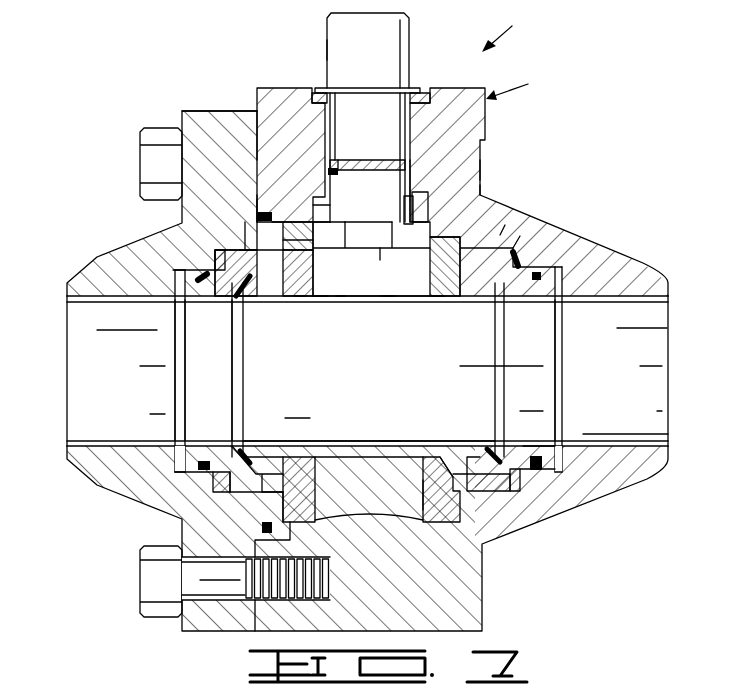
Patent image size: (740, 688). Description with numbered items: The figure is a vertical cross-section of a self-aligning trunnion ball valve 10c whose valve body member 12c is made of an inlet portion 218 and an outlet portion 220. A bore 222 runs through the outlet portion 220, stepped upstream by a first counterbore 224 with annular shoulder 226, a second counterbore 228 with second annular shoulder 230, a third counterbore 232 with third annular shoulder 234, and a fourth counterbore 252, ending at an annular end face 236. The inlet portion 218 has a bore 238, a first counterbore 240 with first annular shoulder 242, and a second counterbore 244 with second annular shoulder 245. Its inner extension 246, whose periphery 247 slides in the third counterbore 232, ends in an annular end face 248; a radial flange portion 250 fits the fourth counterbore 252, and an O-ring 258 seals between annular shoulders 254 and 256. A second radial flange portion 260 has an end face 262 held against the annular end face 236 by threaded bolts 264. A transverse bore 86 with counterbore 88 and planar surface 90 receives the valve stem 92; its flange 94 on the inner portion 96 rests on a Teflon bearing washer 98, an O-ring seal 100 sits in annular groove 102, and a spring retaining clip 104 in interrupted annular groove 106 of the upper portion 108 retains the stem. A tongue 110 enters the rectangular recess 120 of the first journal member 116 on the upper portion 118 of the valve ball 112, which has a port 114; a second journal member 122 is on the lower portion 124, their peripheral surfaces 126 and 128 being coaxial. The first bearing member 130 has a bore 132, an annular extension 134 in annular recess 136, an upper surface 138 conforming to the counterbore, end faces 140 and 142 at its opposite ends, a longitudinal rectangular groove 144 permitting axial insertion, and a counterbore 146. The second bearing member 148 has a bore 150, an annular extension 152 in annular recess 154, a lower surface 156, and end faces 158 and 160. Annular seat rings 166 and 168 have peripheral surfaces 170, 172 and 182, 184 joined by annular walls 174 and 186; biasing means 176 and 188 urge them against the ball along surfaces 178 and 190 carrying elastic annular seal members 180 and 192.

The self-aligning trunnion ball valve 10c is at (512, 34).
The valve body member 12c is at (522, 87).
The transverse bore 86 is at (420, 190).
The counterbore 88 is at (418, 214).
The planar surface 90 is at (414, 210).
The valve stem 92 is at (395, 36).
The flange 94 is at (348, 200).
The inner portion of the stem 96 is at (390, 292).
The bearing washer 98 is at (318, 204).
The O-ring seal 100 is at (338, 165).
The annular groove 102 is at (398, 162).
The spring retaining clip 104 is at (414, 95).
The interrupted annular groove 106 is at (331, 92).
The upper portion of the stem 108 is at (350, 46).
The tongue 110 is at (382, 300).
The valve ball 112 is at (390, 302).
The port 114 is at (406, 384).
The first journal member 116 is at (336, 302).
The upper portion of the valve ball 118 is at (388, 302).
The rectangular recess 120 is at (364, 245).
The second journal member 122 is at (348, 455).
The lower portion of the valve ball 124 is at (388, 440).
The peripheral surface of the first journal member 126 is at (438, 302).
The peripheral surface of the second journal member 128 is at (428, 497).
The first bearing member 130 is at (318, 302).
The bore of the first bearing member 132 is at (313, 264).
The annular extension 134 is at (322, 302).
The annular recess 136 is at (300, 302).
The upper surface of the first bearing member 138 is at (318, 220).
The seal ring 140 is at (252, 292).
The end face of the first bearing member 142 is at (460, 234).
The longitudinal rectangular groove 144 is at (313, 244).
The counterbore of the bearing bore 146 is at (432, 258).
The second bearing member 148 is at (300, 455).
The bore of the second bearing member 150 is at (318, 457).
The annular extension 152 is at (290, 458).
The annular recess 154 is at (445, 457).
The lower surface of the second bearing member 156 is at (305, 530).
The end face of the second bearing member 158 is at (283, 508).
The end face of the second bearing member 160 is at (455, 505).
The annular seat ring 166 is at (204, 460).
The annular seat ring 168 is at (537, 456).
The first peripheral surface 170 is at (195, 272).
The second peripheral surface 172 is at (250, 225).
The annular wall 174 is at (222, 492).
The biasing means 176 is at (213, 485).
The surface 178 is at (248, 463).
The elastic annular seal member 180 is at (240, 302).
The first peripheral surface 182 is at (545, 472).
The second peripheral surface 184 is at (508, 222).
The annular wall 186 is at (543, 274).
The biasing means 188 is at (516, 490).
The surface 190 is at (478, 470).
The elastic annular seal member 192 is at (490, 447).
The inlet portion 218 is at (118, 262).
The outlet portion 220 is at (625, 262).
The bore 222 is at (668, 313).
The first counterbore 224 is at (555, 455).
The annular shoulder 226 is at (565, 302).
The second counterbore 228 is at (525, 235).
The second annular shoulder 230 is at (519, 250).
The third counterbore 232 is at (481, 178).
The third annular shoulder 234 is at (481, 192).
The annular end face 236 is at (256, 128).
The bore 238 is at (80, 306).
The first counterbore 240 is at (183, 302).
The first annular shoulder 242 is at (177, 302).
The second counterbore 244 is at (246, 245).
The second annular shoulder 245 is at (215, 247).
The inner extension 246 is at (237, 273).
The periphery of the inner extension 247 is at (298, 236).
The annular end face 248 is at (280, 236).
The radial flange portion 250 is at (258, 212).
The fourth counterbore 252 is at (270, 200).
The annular shoulder 254 is at (276, 213).
The annular shoulder 256 is at (270, 210).
The O-ring 258 is at (268, 534).
The second radial flange portion 260 is at (233, 115).
The end face 262 is at (257, 137).
The threaded bolts 264 is at (158, 135).